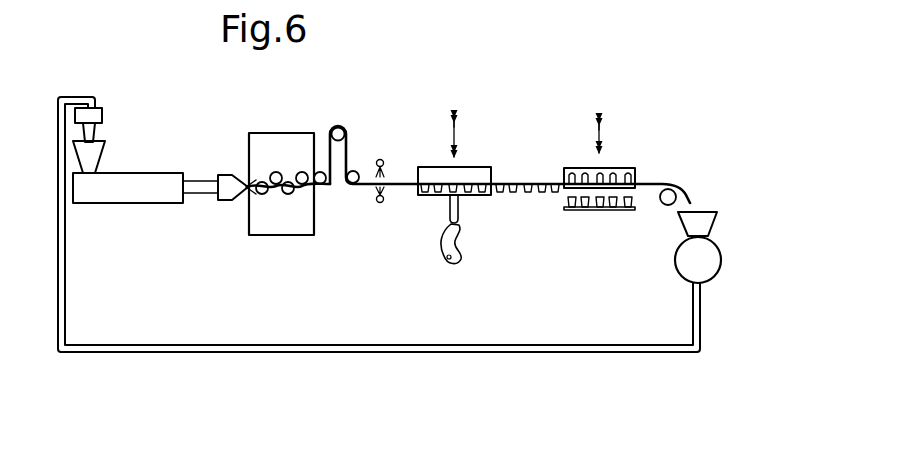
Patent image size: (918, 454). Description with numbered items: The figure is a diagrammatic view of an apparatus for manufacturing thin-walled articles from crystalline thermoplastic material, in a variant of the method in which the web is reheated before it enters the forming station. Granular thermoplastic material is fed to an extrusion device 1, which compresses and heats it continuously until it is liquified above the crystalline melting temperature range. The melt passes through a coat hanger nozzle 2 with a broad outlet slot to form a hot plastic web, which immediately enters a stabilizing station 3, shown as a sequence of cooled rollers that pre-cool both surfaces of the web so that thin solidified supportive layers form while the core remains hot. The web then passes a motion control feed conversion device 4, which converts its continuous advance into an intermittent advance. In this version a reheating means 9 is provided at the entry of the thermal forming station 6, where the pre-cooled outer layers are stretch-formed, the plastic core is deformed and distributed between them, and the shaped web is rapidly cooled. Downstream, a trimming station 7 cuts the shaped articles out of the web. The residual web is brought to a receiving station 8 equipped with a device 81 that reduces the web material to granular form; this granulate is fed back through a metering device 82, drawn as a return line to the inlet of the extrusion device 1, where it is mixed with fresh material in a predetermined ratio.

The extrusion device 1 is at (166, 151).
The coat hanger nozzle 2 is at (226, 159).
The stabilizing station 3 is at (288, 127).
The motion control feed conversion device 4 is at (340, 125).
The thermal forming station 6 is at (483, 162).
The trimming station 7 is at (629, 159).
The receiving station 8 is at (703, 202).
The reheating means 9 is at (381, 159).
The device for reducing the web material into granular form 81 is at (713, 262).
The metering device 82 is at (96, 110).